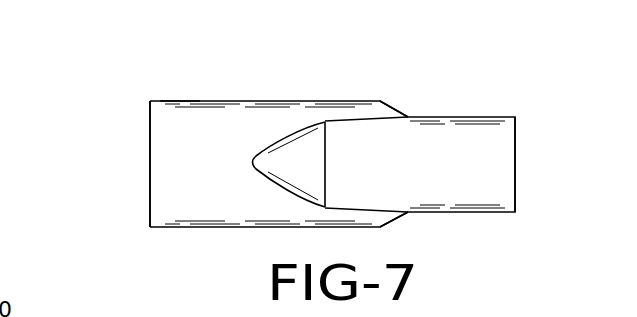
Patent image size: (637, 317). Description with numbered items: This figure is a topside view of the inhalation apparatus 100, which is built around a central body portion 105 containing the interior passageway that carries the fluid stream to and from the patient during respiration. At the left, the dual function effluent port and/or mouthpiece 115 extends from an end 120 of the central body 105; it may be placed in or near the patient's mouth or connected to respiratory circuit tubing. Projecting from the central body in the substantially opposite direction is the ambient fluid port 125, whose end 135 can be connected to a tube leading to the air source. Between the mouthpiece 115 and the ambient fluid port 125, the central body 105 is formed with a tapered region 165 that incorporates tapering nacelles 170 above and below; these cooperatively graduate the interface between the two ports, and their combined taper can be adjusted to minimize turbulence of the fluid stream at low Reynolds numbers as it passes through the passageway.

The inhalation apparatus 100 is at (314, 135).
The central body portion 105 is at (298, 100).
The dual function effluent port and/or mouthpiece 115 is at (155, 100).
The end of the central body 120 is at (178, 100).
The ambient fluid port 125 is at (482, 118).
The end of the ambient fluid port 135 is at (510, 212).
The tapered region 165 is at (278, 142).
The tapering nacelles 170 is at (397, 104).